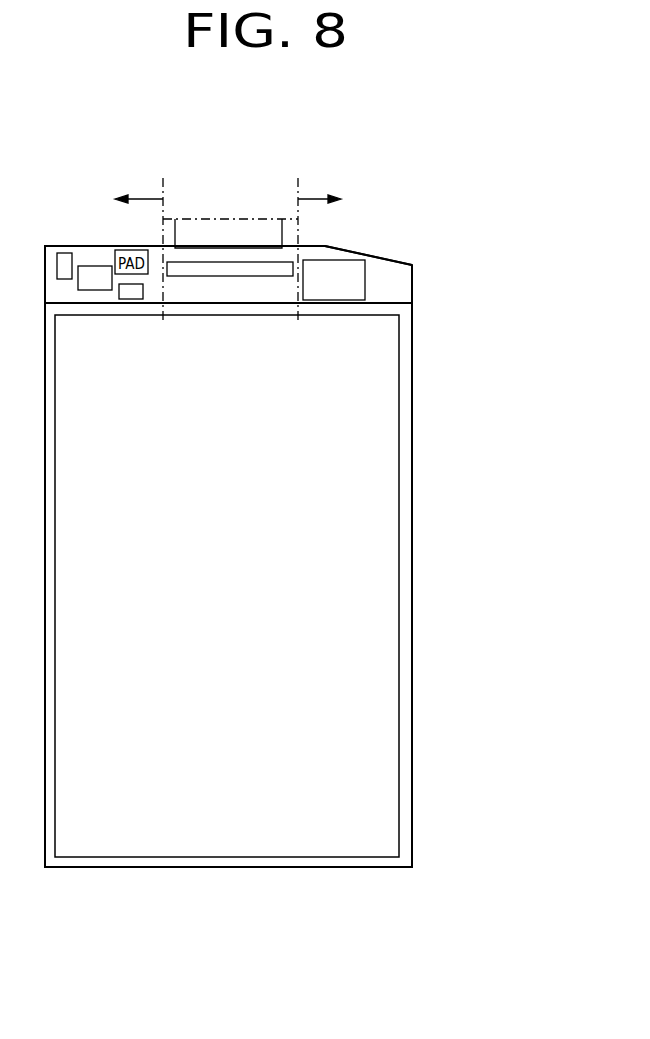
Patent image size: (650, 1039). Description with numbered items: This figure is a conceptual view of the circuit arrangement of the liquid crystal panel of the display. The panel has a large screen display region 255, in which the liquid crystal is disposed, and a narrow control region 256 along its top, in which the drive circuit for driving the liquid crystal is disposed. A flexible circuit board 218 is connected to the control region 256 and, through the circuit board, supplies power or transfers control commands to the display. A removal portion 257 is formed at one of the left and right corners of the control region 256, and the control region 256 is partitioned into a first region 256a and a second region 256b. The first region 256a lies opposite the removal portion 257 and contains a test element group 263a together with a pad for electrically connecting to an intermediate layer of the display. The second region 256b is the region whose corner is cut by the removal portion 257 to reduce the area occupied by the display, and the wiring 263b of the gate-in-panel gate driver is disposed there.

The flexible circuit board 218 is at (226, 227).
The screen display region 255 is at (377, 536).
The control region 256 is at (392, 293).
The first region 256a is at (141, 199).
The second region 256b is at (318, 199).
The removal portion 257 is at (358, 252).
The test element group 263a is at (93, 266).
The wiring of the gate-in-panel gate driver 263b is at (358, 275).